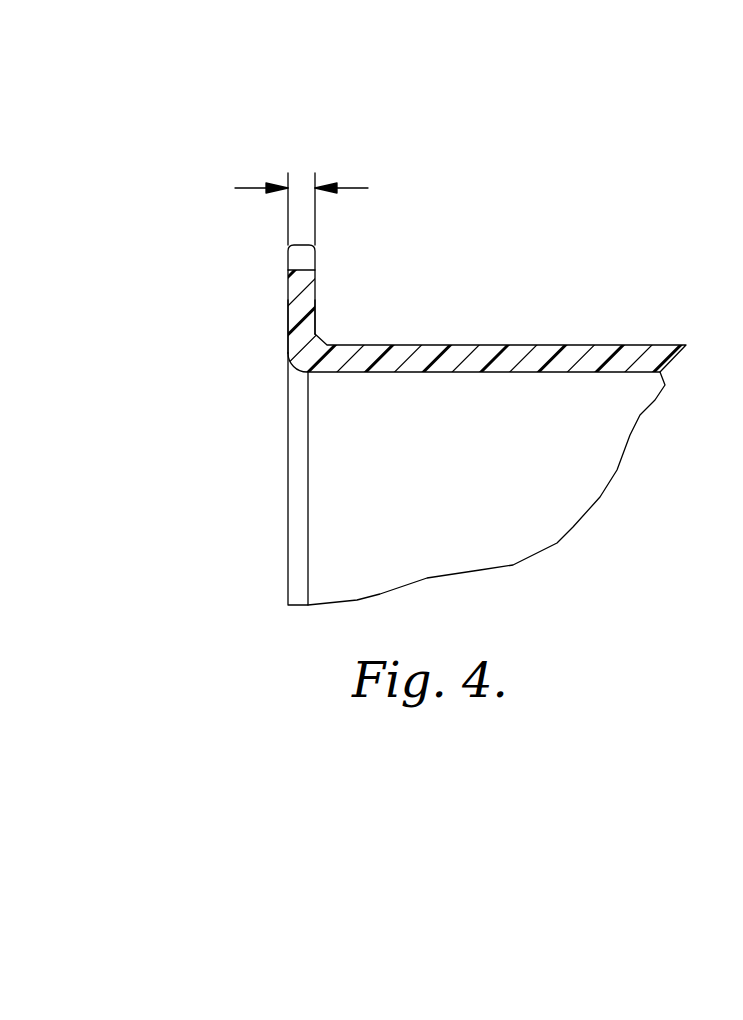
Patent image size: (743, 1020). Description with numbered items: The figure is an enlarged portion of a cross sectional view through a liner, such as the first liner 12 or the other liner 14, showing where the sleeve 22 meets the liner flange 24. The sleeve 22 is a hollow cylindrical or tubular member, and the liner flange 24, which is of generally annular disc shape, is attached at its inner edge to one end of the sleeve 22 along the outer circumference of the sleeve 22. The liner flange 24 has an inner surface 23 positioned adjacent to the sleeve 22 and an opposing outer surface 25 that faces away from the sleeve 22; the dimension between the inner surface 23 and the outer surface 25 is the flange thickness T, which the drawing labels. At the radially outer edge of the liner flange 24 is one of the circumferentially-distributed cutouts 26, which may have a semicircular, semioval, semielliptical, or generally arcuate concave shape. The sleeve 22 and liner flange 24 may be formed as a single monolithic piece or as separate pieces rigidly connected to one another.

The first liner 12 is at (464, 385).
The liner 14 is at (464, 385).
The sleeve 22 is at (585, 455).
The inner surface 23 is at (317, 323).
The liner flange 24 is at (305, 297).
The outer surface 25 is at (288, 330).
The cutouts 26 is at (295, 262).